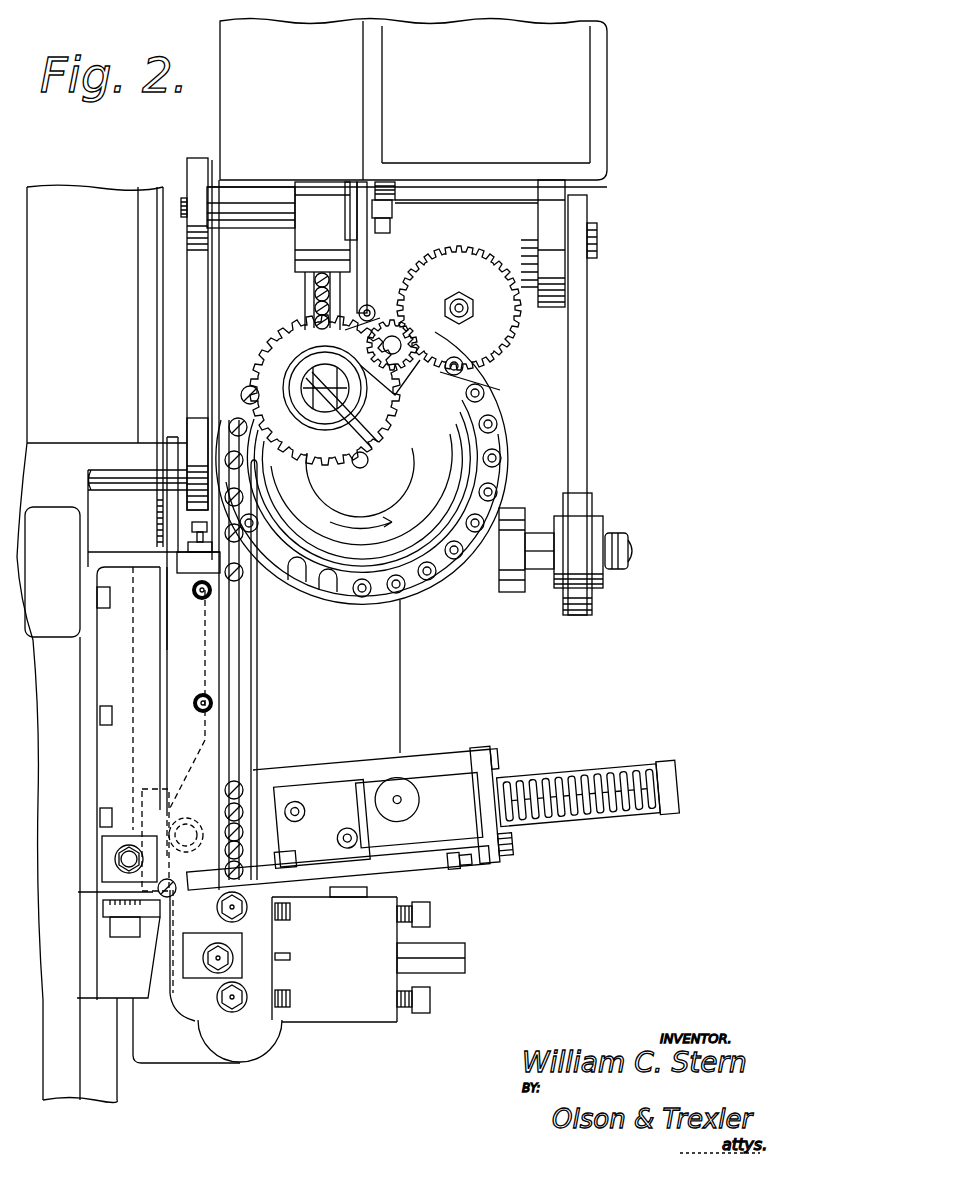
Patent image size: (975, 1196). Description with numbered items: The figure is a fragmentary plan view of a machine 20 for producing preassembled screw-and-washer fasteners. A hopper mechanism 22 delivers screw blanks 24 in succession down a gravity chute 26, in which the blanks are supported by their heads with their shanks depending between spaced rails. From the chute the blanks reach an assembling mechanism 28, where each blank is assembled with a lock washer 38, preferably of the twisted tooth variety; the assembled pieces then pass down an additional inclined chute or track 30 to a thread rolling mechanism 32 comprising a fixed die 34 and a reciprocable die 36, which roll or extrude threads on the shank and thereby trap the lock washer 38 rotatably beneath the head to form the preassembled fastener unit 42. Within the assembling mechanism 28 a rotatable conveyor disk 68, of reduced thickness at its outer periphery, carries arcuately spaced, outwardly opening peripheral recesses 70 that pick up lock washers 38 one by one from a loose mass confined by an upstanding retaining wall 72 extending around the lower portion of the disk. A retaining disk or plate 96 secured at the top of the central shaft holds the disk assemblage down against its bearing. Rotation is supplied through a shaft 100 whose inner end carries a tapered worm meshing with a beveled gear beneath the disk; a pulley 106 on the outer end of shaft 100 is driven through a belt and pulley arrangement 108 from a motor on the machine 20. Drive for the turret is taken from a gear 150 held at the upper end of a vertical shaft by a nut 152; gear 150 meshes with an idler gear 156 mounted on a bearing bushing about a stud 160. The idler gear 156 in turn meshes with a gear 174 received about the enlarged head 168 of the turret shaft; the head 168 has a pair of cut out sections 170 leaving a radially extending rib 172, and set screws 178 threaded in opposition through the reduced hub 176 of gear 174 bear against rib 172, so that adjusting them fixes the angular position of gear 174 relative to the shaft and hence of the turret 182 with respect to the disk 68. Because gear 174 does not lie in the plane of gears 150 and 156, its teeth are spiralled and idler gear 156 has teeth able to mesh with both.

The machine 20 is at (455, 670).
The hopper mechanism 22 is at (605, 75).
The screw blanks 24 is at (323, 293).
The gravity chute 26 is at (338, 287).
The assembling mechanism 28 is at (500, 390).
The inclined chute or track 30 is at (245, 647).
The thread rolling mechanism 32 is at (150, 783).
The fixed die 34 is at (185, 987).
The reciprocable die 36 is at (153, 890).
The lock washers 38 is at (393, 592).
The preassembled fastener unit 42 is at (172, 886).
The conveyor disk 68 is at (487, 410).
The peripheral recesses 70 is at (327, 590).
The upstanding wall 72 is at (420, 604).
The retaining disk or plate 96 is at (404, 491).
The shaft 100 is at (627, 546).
The pulley 106 is at (594, 501).
The belt and pulley arrangement 108 is at (570, 275).
The gear 150 is at (523, 317).
The nut 152 is at (418, 277).
The idler gear 156 is at (412, 340).
The stud 160 is at (475, 280).
The enlarged head 168 is at (300, 395).
The cut out sections 170 is at (368, 460).
The radially extending rib 172 is at (308, 338).
The gear 174 is at (373, 403).
The reduced hub 176 is at (490, 378).
The set screws 178 is at (312, 385).
The turret 182 is at (343, 465).